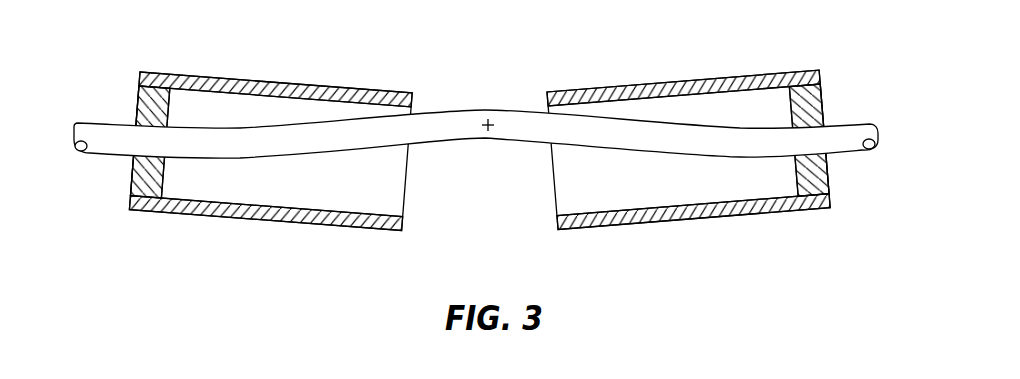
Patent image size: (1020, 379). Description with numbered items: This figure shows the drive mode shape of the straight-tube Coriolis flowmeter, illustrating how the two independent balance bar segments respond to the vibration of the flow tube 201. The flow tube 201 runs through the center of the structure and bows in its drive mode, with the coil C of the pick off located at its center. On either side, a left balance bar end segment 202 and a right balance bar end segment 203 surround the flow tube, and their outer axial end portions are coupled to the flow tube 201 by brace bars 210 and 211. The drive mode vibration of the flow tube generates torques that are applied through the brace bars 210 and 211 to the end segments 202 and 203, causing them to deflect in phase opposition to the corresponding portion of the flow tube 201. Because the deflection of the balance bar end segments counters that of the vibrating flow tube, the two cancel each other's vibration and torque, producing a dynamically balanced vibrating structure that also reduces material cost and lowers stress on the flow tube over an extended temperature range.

The flow tube 201 is at (250, 154).
The balance bar end segment 202 is at (281, 83).
The balance bar end segment 203 is at (707, 73).
The brace bar 210 is at (131, 170).
The brace bar 211 is at (830, 170).
The coil C is at (488, 110).